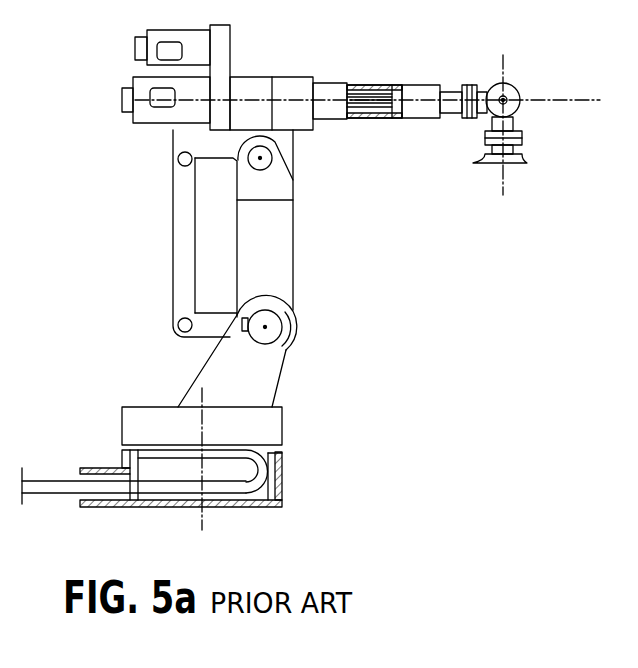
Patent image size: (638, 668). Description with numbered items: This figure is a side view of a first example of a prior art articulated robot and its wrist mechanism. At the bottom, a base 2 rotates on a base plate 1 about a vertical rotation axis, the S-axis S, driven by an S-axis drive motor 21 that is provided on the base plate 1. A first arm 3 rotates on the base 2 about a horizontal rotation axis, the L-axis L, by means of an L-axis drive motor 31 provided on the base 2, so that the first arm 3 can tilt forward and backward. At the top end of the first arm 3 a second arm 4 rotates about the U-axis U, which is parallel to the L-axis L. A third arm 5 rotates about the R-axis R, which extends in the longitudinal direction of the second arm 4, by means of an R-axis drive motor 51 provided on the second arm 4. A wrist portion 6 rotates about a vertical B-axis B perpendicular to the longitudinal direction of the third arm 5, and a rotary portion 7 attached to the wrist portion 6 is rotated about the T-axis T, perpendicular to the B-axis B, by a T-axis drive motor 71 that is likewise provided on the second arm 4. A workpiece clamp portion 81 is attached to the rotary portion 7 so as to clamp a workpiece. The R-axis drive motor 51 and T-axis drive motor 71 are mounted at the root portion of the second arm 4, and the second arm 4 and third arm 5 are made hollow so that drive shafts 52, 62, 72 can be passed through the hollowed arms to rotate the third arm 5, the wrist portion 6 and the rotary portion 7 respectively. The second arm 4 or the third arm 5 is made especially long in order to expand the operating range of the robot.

The base plate 1 is at (283, 487).
The base 2 is at (283, 432).
The first arm 3 is at (280, 253).
The second arm 4 is at (324, 90).
The third arm 5 is at (452, 100).
The wrist portion 6 is at (513, 89).
The rotary portion 7 is at (513, 125).
The S-axis drive motor 21 is at (170, 470).
The L-axis drive motor 31 is at (273, 333).
The R-axis drive motor 51 is at (146, 115).
The drive shaft 52 is at (378, 100).
The drive shaft 62 is at (392, 92).
The T-axis drive motor 71 is at (150, 33).
The drive shaft 72 is at (380, 113).
The workpiece clamp portion 81 is at (527, 162).
The S-axis S is at (200, 432).
The L-axis L is at (265, 327).
The U-axis U is at (262, 160).
The R-axis R is at (330, 104).
The B-axis B is at (493, 70).
The T-axis T is at (505, 185).